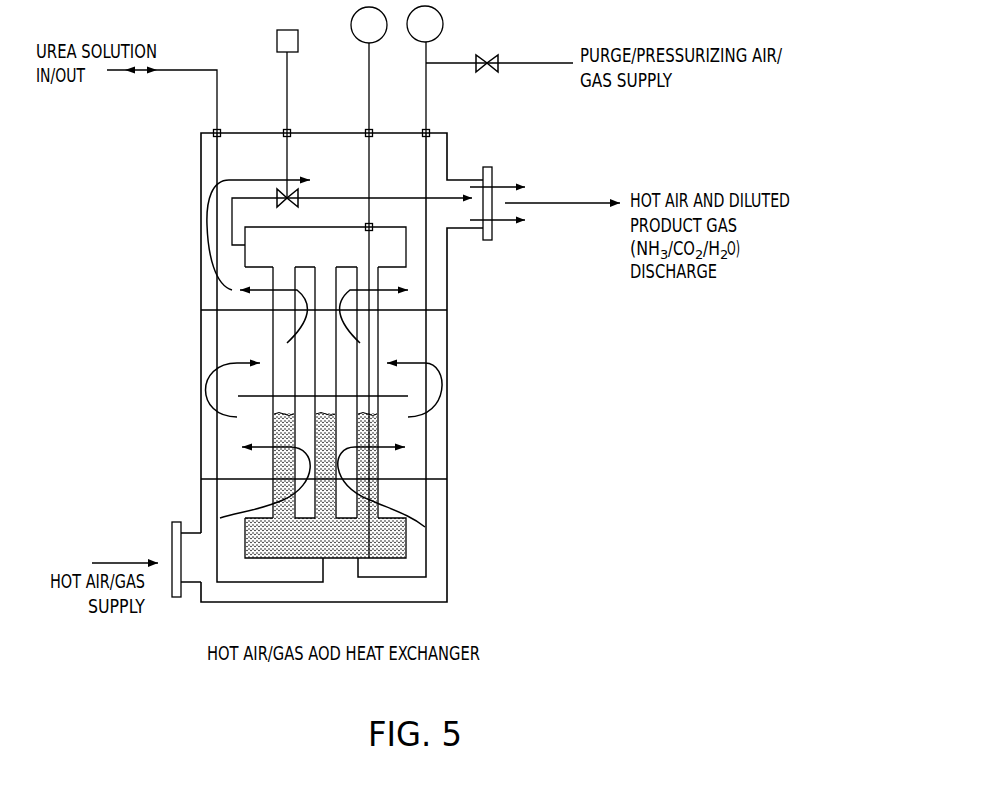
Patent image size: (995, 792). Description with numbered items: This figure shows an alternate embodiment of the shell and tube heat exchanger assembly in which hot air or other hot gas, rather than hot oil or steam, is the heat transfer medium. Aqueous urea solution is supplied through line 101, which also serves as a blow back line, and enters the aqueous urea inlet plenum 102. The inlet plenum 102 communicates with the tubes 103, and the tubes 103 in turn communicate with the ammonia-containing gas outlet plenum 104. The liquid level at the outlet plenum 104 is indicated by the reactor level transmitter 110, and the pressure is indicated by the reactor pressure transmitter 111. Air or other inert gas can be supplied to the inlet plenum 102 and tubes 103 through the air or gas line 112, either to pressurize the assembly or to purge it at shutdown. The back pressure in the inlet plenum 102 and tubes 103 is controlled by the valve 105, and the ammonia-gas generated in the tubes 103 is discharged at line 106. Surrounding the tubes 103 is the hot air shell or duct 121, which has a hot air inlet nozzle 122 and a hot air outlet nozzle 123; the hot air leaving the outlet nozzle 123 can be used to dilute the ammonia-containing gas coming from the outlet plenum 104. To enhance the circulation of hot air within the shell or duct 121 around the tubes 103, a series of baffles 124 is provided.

The line 101 is at (187, 69).
The aqueous urea inlet plenum 102 is at (245, 523).
The tubes 103 is at (273, 357).
The ammonia-containing gas outlet plenum 104 is at (245, 258).
The valve 105 is at (287, 170).
The line 106 is at (393, 197).
The reactor level transmitter 110 is at (368, 165).
The reactor pressure transmitter 111 is at (428, 50).
The air or gas line 112 is at (513, 62).
The hot air shell or duct 121 is at (447, 368).
The hot air inlet nozzle 122 is at (172, 545).
The hot air outlet nozzle 123 is at (493, 176).
The baffles 124 is at (437, 309).